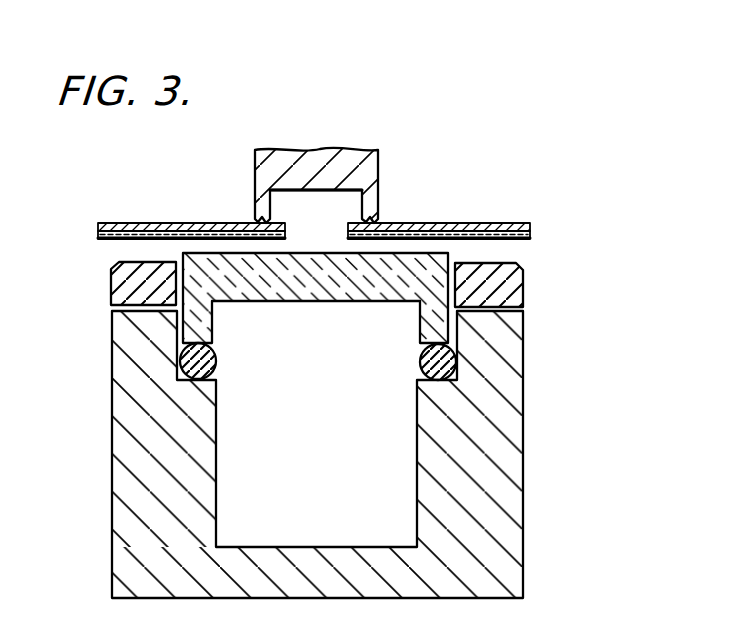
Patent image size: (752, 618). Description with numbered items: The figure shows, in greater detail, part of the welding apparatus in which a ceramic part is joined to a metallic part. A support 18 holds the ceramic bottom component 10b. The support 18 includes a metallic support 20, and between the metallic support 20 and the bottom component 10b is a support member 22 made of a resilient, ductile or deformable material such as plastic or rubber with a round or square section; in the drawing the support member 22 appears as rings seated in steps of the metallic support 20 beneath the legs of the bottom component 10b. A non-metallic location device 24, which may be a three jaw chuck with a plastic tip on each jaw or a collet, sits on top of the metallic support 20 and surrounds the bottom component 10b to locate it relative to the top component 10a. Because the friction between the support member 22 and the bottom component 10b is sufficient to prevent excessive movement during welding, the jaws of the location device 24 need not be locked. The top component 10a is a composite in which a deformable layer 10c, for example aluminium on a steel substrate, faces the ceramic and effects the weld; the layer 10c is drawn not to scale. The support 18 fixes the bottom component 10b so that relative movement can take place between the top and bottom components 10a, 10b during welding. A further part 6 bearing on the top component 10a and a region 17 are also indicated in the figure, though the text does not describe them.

The component / semiconductor chip 6 is at (331, 160).
The contact point of component lead with membrane 17 is at (378, 224).
The top component 10a is at (507, 229).
The bottom component 10b is at (207, 262).
The deformable layer 10c is at (530, 242).
The support 18 is at (564, 311).
The metallic support 20 is at (508, 466).
The support member 22 is at (455, 372).
The location device 24 is at (118, 278).